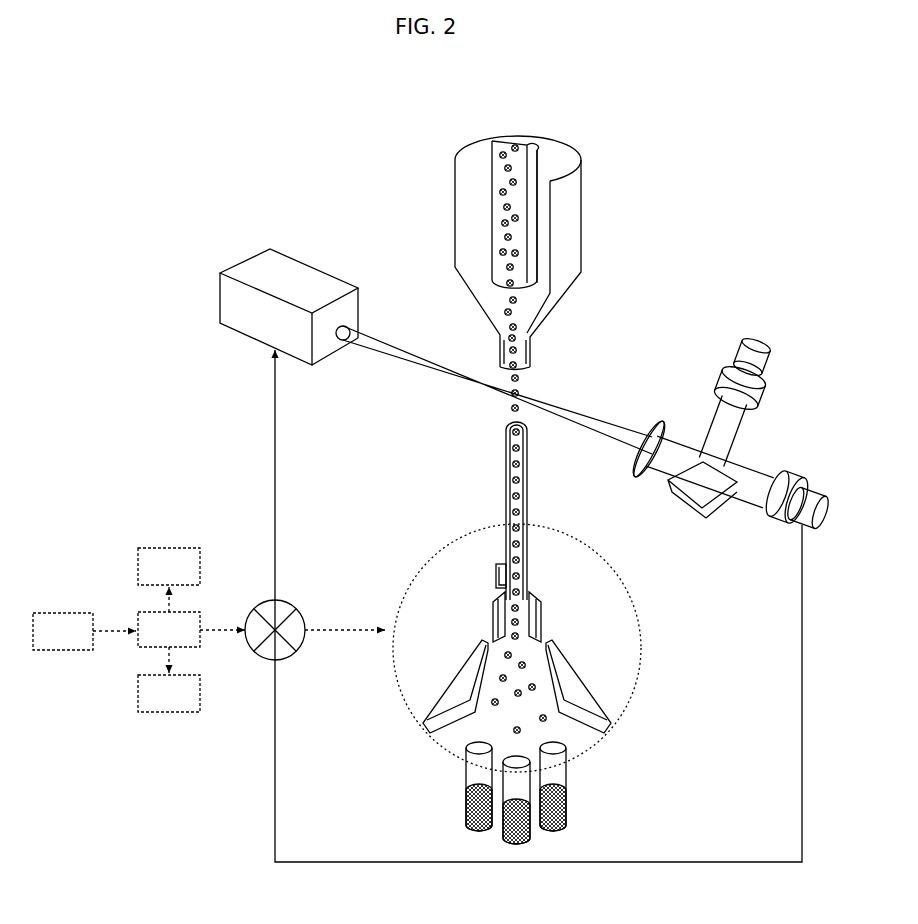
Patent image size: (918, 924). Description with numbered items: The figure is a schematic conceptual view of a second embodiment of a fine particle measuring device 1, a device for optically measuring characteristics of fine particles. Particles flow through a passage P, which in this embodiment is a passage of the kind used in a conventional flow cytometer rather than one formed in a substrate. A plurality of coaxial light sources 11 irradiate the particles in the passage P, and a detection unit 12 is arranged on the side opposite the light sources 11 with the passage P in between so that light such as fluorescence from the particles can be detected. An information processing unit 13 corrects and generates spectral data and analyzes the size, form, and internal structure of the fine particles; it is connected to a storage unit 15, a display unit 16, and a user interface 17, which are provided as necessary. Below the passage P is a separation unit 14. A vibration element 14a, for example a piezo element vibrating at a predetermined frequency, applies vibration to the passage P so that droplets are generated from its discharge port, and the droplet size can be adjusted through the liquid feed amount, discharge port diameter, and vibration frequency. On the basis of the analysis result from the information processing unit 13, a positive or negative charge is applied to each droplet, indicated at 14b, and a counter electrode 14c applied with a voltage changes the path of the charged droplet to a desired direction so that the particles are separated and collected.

The fine particle measuring device 1 is at (848, 142).
The light source 11 is at (756, 348).
The detection unit 12 is at (302, 278).
The information processing unit 13 is at (191, 629).
The separation unit 14 is at (616, 625).
The vibration element 14a is at (497, 567).
The charging 14b is at (493, 605).
The counter electrode 14c is at (612, 702).
The storage unit 15 is at (169, 679).
The display unit 16 is at (169, 580).
The user interface 17 is at (84, 631).
The passage P is at (506, 470).